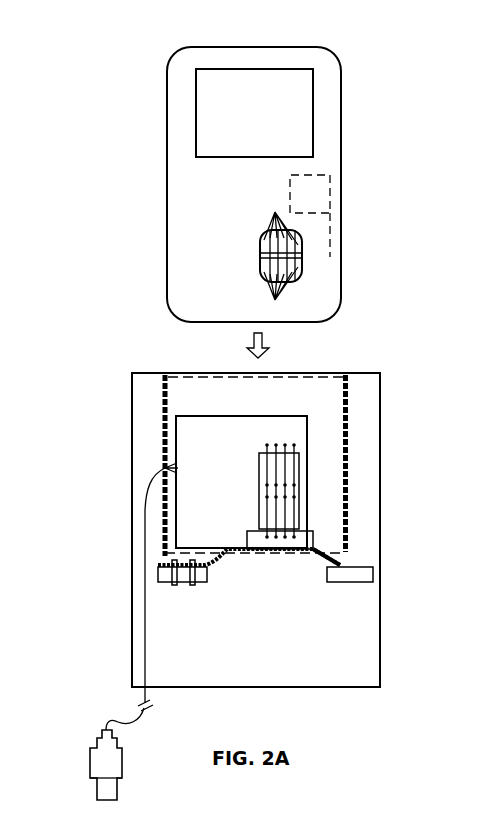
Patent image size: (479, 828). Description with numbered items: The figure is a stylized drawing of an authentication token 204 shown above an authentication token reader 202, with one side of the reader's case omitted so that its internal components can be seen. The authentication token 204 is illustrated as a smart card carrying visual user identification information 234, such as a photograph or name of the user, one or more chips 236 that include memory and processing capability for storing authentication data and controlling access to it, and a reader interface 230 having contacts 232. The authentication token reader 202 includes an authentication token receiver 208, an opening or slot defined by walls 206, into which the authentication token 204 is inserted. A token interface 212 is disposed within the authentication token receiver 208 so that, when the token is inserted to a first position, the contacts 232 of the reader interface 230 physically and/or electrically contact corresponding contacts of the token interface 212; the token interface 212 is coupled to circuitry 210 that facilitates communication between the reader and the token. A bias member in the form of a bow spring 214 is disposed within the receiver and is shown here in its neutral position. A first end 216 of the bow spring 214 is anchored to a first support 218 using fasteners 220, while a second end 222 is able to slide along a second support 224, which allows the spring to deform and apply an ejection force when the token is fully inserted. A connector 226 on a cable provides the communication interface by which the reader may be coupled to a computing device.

The authentication token reader 202 is at (380, 373).
The authentication token 204 is at (187, 46).
The walls 206 is at (163, 423).
The authentication token receiver 208 is at (177, 373).
The circuitry 210 is at (280, 416).
The token interface 212 is at (259, 477).
The bow spring 214 is at (247, 540).
The first end 216 is at (158, 563).
The first support 218 is at (208, 571).
The fasteners 220 is at (173, 582).
The second end 222 is at (340, 563).
The second support 224 is at (328, 582).
The connector 226 is at (122, 760).
The reader interface 230 is at (260, 262).
The contacts 232 is at (275, 212).
The visual user identification information 234 is at (274, 123).
The chips 236 is at (333, 205).